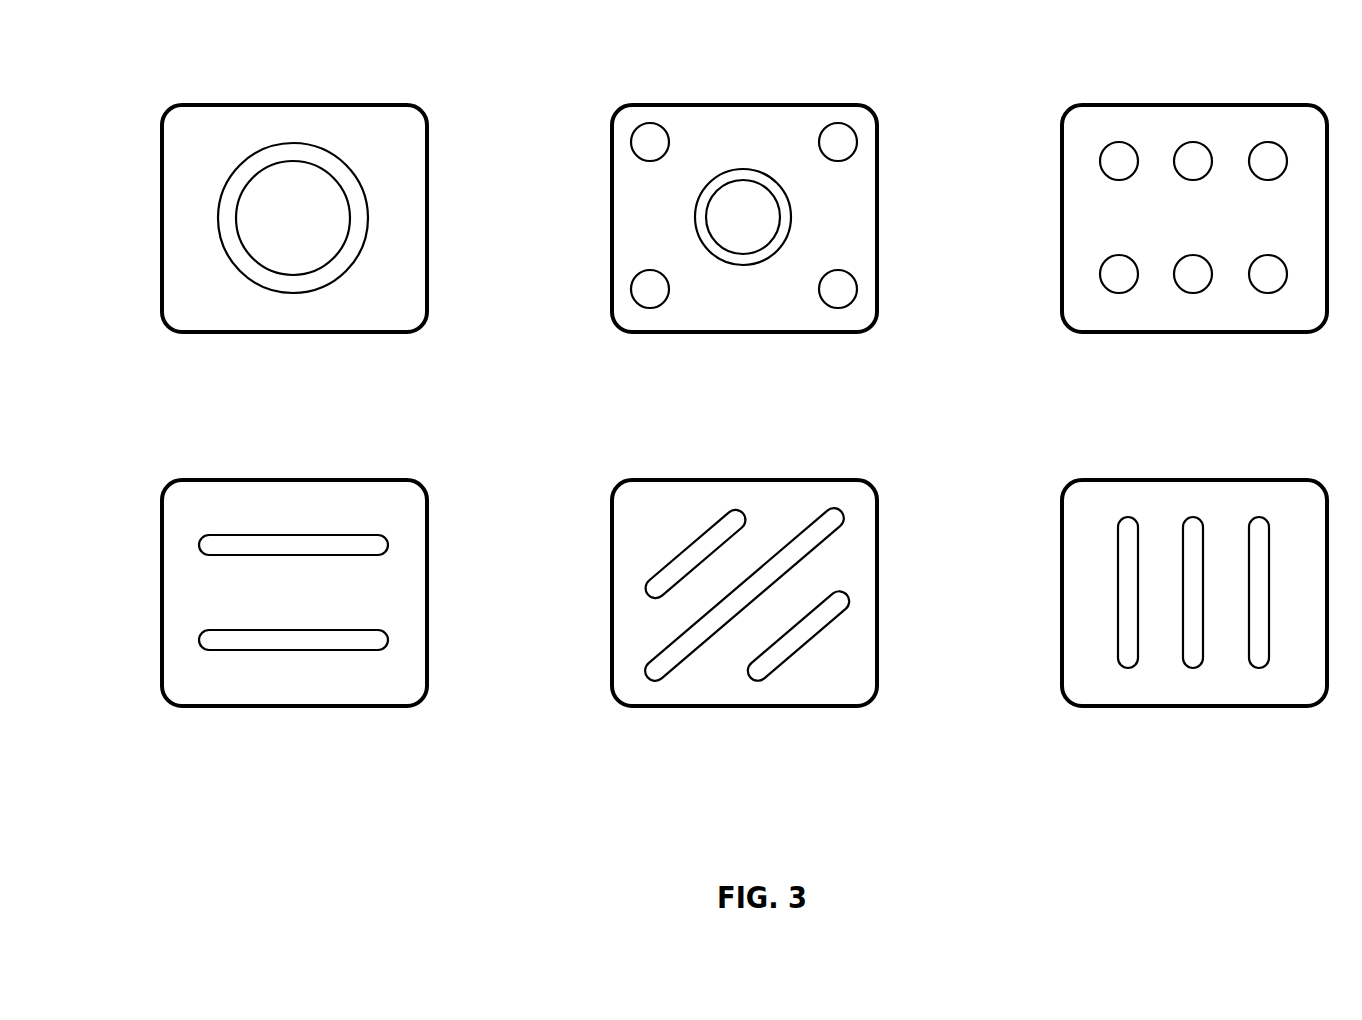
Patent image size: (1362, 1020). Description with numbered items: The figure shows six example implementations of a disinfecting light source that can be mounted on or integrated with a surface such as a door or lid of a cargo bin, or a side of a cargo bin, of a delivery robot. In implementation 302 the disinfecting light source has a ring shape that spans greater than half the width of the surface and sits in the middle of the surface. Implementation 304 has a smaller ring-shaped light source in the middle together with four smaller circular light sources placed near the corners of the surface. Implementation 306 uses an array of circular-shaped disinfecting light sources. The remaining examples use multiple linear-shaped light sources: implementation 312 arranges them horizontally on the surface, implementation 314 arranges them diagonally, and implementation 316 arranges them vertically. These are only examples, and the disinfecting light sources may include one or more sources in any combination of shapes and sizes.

The implementation with ring-shaped disinfecting light source 302 is at (385, 104).
The implementation with smaller ring and four corner circular light sources 304 is at (835, 104).
The implementation with array of circular light sources 306 is at (1285, 104).
The implementation with horizontal linear light sources 312 is at (385, 479).
The implementation with diagonal linear light sources 314 is at (835, 479).
The implementation with vertical linear light sources 316 is at (1285, 479).